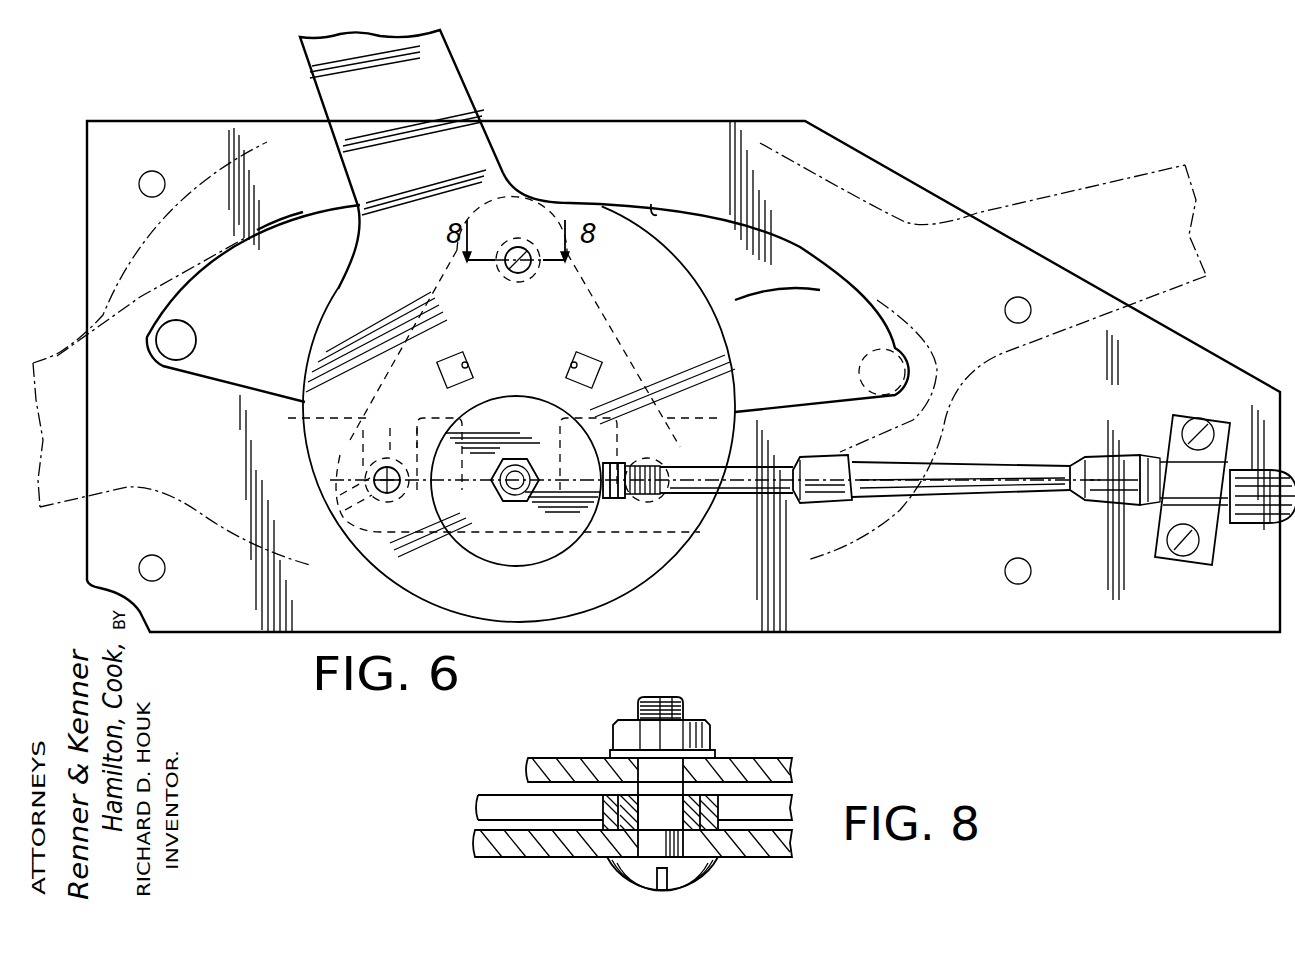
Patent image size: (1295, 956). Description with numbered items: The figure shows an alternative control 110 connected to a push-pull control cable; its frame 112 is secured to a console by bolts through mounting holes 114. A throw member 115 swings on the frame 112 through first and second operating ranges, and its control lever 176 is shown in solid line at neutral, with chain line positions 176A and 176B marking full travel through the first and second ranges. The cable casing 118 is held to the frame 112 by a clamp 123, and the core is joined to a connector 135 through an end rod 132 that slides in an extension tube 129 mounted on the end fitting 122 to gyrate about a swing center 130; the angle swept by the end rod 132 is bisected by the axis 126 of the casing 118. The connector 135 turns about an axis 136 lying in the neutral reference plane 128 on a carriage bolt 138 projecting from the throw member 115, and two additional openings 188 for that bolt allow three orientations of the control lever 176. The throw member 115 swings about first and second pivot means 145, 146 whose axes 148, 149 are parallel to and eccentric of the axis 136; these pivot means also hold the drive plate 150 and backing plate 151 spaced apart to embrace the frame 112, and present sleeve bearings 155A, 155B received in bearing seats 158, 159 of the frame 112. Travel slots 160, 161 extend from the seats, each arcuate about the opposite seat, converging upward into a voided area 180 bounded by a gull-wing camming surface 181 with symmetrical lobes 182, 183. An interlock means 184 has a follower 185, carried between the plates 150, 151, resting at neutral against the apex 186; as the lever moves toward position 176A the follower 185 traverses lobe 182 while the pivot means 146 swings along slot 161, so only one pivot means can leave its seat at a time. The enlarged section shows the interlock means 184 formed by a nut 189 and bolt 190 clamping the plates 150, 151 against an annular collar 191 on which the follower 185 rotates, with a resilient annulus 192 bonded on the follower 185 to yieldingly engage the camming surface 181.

In FIG. 6, the control 110 is at (880, 122).
In FIG. 6, the frame 112 is at (937, 620).
In FIG. 8, the frame 112 is at (497, 807).
In FIG. 6, the mounting holes 114 is at (148, 171).
In FIG. 6, the throw member 115 is at (690, 324).
In FIG. 6, the casing 118 is at (1274, 532).
In FIG. 6, the end fitting 122 is at (1228, 469).
In FIG. 6, the clamp 123 is at (1172, 440).
In FIG. 6, the axis of the cable casing 126 is at (1067, 488).
In FIG. 6, the neutral reference plane 128 is at (997, 480).
In FIG. 6, the extension tube 129 is at (942, 470).
In FIG. 6, the swing center 130 is at (1148, 482).
In FIG. 6, the end rod 132 is at (748, 486).
In FIG. 6, the connector 135 is at (513, 557).
In FIG. 6, the axis 136 is at (508, 486).
In FIG. 6, the bolt 138 is at (527, 458).
In FIG. 6, the first pivot means 145 is at (365, 490).
In FIG. 6, the second pivot means 146 is at (652, 506).
In FIG. 6, the axis of first pivot means 148 is at (379, 473).
In FIG. 6, the axis of second pivot means 149 is at (655, 470).
In FIG. 6, the drive plate 150 is at (688, 302).
In FIG. 8, the drive plate 150 is at (748, 850).
In FIG. 6, the backing plate 151 is at (612, 302).
In FIG. 8, the backing plate 151 is at (533, 768).
In FIG. 6, the sleeve bearing 155A is at (378, 532).
In FIG. 6, the sleeve bearing 155B is at (655, 530).
In FIG. 6, the bearing seat 158 is at (386, 522).
In FIG. 6, the bearing seat 159 is at (622, 498).
In FIG. 6, the travel slot 160 is at (375, 442).
In FIG. 6, the travel slot 161 is at (640, 448).
In FIG. 6, the control lever 176 is at (433, 82).
In FIG. 6, the control lever chain line position 176A is at (62, 348).
In FIG. 6, the control lever chain line position 176B is at (1185, 292).
In FIG. 6, the voided area 180 is at (684, 231).
In FIG. 6, the gull-wing camming surface 181 is at (732, 223).
In FIG. 6, the lobe 182 is at (305, 226).
In FIG. 6, the lobe 183 is at (653, 214).
In FIG. 6, the interlock means 184 is at (513, 282).
In FIG. 8, the interlock means 184 is at (719, 743).
In FIG. 6, the follower 185 is at (499, 270).
In FIG. 8, the follower 185 is at (603, 818).
In FIG. 6, the apex 186 is at (521, 232).
In FIG. 6, the additional openings 188 is at (573, 362).
In FIG. 8, the nut 189 is at (700, 720).
In FIG. 8, the bolt 190 is at (657, 693).
In FIG. 8, the annular collar 191 is at (613, 753).
In FIG. 8, the resilient annulus 192 is at (714, 793).